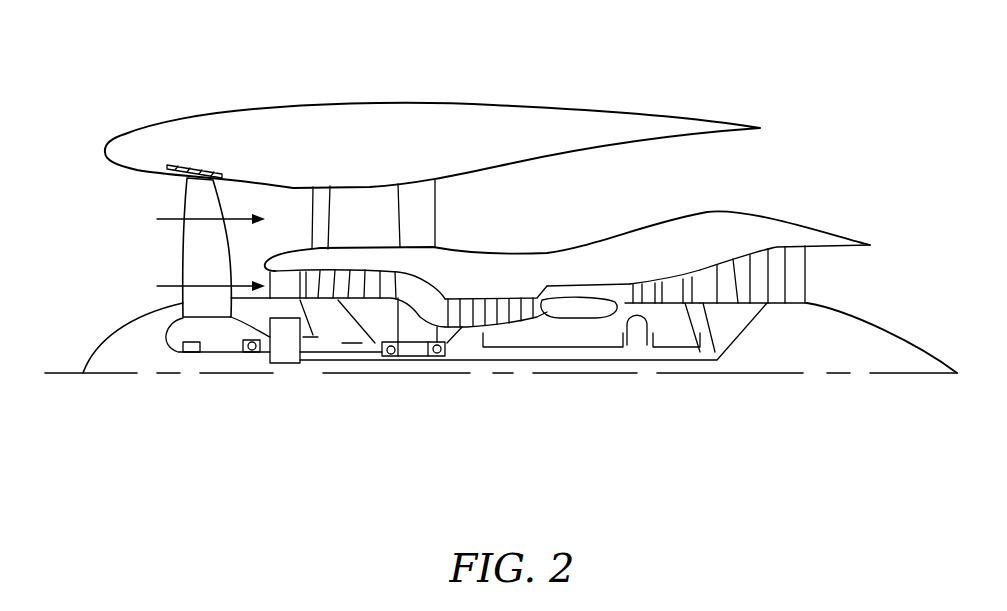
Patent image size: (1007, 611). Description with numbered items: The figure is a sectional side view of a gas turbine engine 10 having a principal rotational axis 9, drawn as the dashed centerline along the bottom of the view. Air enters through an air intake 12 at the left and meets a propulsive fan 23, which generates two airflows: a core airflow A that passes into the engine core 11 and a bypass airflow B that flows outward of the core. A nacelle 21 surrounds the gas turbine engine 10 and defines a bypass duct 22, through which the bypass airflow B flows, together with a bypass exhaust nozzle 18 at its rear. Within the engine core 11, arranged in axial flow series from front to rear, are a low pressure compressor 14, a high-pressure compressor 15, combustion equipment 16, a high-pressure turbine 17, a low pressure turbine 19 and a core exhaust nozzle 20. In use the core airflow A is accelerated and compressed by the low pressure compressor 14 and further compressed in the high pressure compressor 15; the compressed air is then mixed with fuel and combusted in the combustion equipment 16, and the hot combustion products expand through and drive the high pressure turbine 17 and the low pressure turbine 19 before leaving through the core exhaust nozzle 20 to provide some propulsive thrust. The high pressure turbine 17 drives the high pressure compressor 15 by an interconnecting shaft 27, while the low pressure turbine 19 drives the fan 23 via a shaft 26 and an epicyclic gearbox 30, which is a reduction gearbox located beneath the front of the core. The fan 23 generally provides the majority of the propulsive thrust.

The principal rotational axis 9 is at (660, 377).
The gas turbine engine 10 is at (501, 245).
The core 11 is at (550, 262).
The air intake 12 is at (128, 197).
The low pressure compressor 14 is at (357, 275).
The high-pressure compressor 15 is at (502, 305).
The combustion equipment 16 is at (575, 308).
The high-pressure turbine 17 is at (640, 293).
The bypass exhaust nozzle 18 is at (760, 167).
The low pressure turbine 19 is at (777, 263).
The core exhaust nozzle 20 is at (848, 273).
The nacelle 21 is at (413, 113).
The bypass duct 22 is at (702, 184).
The propulsive fan 23 is at (186, 250).
The shaft 26 is at (493, 360).
The interconnecting shaft 27 is at (535, 347).
The epicyclic gearbox 30 is at (283, 353).